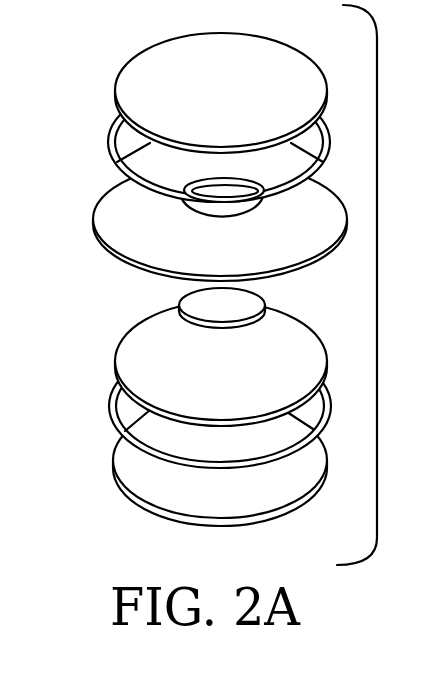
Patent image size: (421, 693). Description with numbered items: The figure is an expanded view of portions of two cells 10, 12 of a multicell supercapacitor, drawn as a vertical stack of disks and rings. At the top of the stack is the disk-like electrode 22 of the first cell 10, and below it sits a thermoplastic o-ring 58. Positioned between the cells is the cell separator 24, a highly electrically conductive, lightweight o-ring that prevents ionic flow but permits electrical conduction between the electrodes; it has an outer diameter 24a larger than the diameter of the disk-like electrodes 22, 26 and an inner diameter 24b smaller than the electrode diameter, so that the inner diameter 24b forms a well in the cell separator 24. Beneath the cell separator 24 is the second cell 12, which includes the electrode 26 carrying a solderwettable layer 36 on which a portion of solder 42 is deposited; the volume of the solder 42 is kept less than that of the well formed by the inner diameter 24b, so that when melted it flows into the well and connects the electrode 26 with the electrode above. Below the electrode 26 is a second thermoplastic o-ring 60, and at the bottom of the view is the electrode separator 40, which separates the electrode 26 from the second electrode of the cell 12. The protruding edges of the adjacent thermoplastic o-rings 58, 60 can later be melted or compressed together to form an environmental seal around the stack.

The cell 10 is at (201, 153).
The cell 12 is at (211, 420).
The disk-like electrode 22 is at (290, 70).
The cell separator 24 is at (201, 233).
The outer diameter 24a is at (93, 202).
The inner diameter 24b is at (195, 226).
The electrode 26 is at (150, 407).
The solderwettable layer 36 is at (295, 352).
The electrode separator 40 is at (287, 492).
The solder 42 is at (195, 302).
The thermoplastic o-ring 58 is at (110, 136).
The thermoplastic o-ring 60 is at (120, 430).